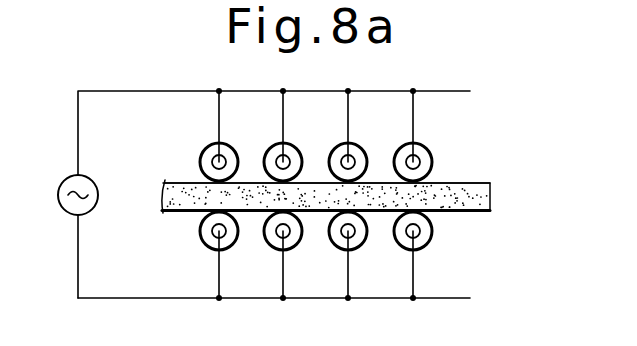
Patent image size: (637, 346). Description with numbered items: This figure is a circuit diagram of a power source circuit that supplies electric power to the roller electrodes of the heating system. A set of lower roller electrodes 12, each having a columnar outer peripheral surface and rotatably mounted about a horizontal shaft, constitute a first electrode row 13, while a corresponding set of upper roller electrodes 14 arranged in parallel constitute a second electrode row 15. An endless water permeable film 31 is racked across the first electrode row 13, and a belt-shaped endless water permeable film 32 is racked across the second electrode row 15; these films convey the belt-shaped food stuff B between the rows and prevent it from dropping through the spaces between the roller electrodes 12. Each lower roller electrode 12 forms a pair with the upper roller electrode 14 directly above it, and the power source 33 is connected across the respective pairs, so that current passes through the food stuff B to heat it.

The roller electrodes 12 is at (265, 247).
The first electrode row 13 is at (450, 242).
The roller electrodes 14 is at (203, 151).
The second electrode row 15 is at (451, 158).
The water permeable film 31 is at (471, 213).
The water permeable film 32 is at (480, 175).
The power source 33 is at (96, 203).
The food stuff B is at (380, 196).